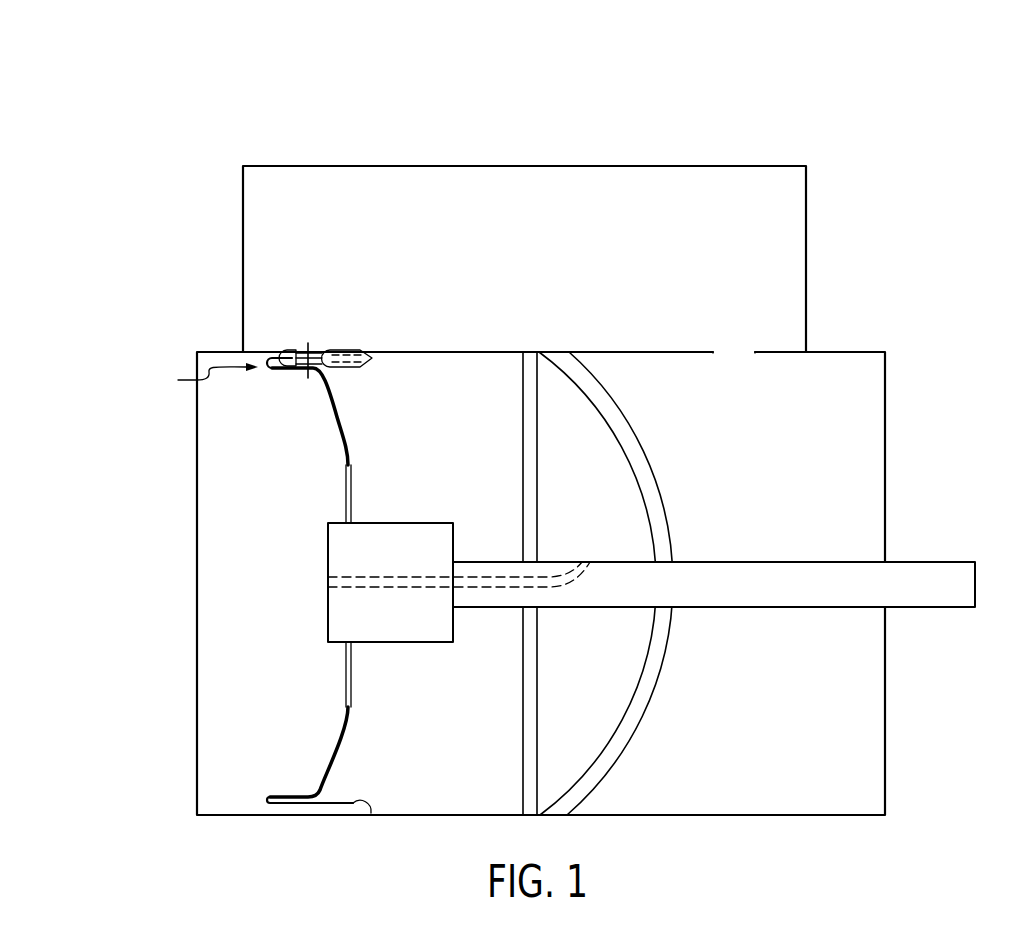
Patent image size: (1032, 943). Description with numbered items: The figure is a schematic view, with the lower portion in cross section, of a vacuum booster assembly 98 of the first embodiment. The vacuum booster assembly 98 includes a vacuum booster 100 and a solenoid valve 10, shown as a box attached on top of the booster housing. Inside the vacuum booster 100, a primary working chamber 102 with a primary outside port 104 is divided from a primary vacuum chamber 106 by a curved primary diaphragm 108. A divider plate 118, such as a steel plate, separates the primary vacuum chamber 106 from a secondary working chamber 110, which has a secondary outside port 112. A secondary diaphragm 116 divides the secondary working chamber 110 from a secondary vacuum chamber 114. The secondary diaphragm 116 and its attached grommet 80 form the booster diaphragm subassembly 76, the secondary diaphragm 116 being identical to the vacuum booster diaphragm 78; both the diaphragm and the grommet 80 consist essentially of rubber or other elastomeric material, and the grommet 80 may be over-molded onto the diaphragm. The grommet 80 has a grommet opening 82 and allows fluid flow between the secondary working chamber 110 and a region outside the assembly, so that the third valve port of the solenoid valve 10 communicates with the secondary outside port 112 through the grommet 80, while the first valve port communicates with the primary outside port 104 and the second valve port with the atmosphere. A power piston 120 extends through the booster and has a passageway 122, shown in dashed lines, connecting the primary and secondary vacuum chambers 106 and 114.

The solenoid valve 10 is at (734, 158).
The vacuum booster assembly 98 is at (433, 136).
The vacuum booster 100 is at (900, 392).
The primary working chamber 102 is at (845, 409).
The primary outside port 104 is at (729, 351).
The primary vacuum chamber 106 is at (610, 502).
The primary diaphragm 108 is at (645, 712).
The secondary working chamber 110 is at (477, 458).
The secondary outside port 112 is at (299, 342).
The secondary vacuum chamber 114 is at (267, 480).
The secondary diaphragm 116 is at (322, 773).
The divider plate 118 is at (522, 735).
The power piston 120 is at (945, 561).
The passageway 122 is at (391, 591).
The booster diaphragm subassembly 76 is at (200, 379).
The vacuum booster diaphragm 78 is at (343, 710).
The grommet 80 is at (282, 352).
The grommet opening 82 is at (316, 350).